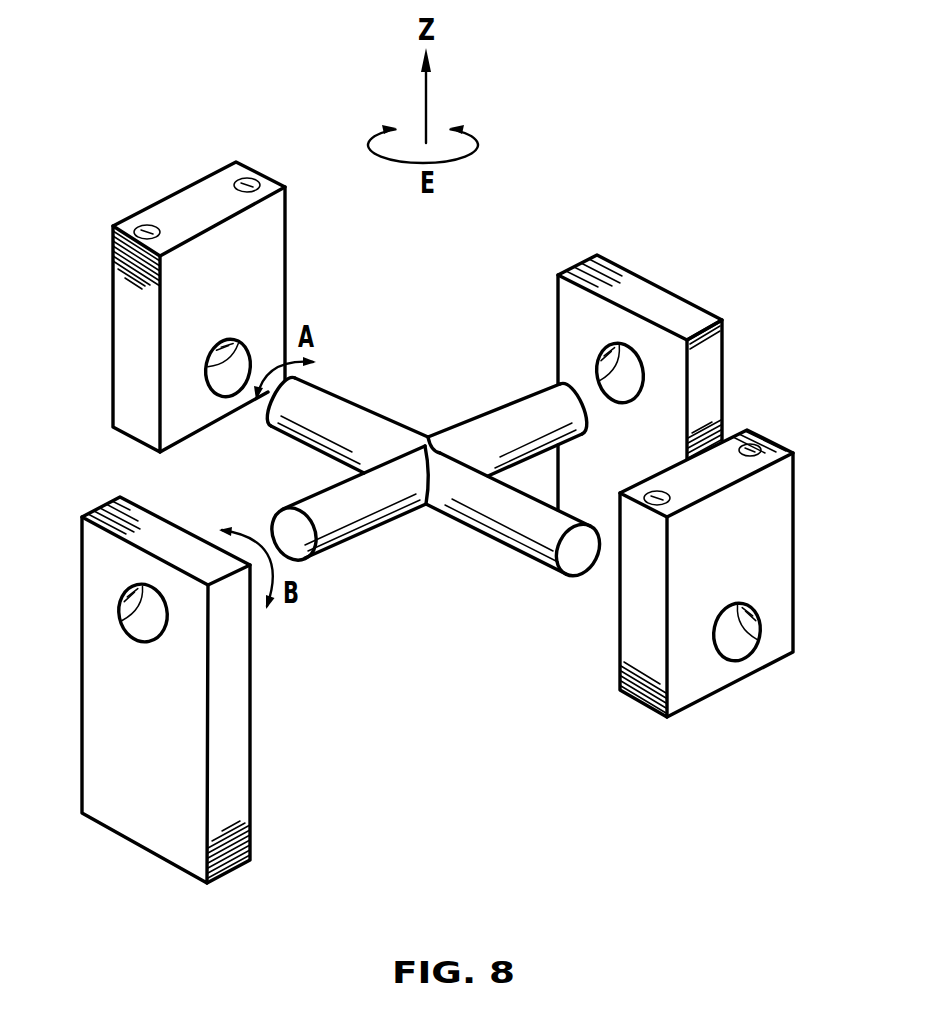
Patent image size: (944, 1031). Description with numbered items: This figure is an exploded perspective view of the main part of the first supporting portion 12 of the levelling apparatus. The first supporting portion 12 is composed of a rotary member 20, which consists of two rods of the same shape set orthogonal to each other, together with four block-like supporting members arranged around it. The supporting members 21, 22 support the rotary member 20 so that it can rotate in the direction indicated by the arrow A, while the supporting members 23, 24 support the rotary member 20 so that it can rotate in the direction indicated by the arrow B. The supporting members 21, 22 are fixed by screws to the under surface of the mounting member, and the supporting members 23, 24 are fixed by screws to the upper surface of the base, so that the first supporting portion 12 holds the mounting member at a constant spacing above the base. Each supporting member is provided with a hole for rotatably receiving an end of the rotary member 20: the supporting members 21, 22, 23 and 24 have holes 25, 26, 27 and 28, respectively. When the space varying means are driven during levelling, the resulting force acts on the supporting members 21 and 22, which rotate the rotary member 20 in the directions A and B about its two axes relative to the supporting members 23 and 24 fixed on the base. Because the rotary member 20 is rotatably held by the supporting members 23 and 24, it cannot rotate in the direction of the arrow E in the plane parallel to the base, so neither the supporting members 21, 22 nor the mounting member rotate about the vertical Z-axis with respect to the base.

The first supporting portion 12 is at (508, 220).
The rotary member 20 is at (370, 437).
The supporting member 21 is at (192, 203).
The supporting member 22 is at (768, 528).
The supporting member 23 is at (113, 733).
The supporting member 24 is at (660, 302).
The hole 25 is at (224, 374).
The hole 26 is at (733, 644).
The hole 27 is at (145, 625).
The hole 28 is at (612, 375).